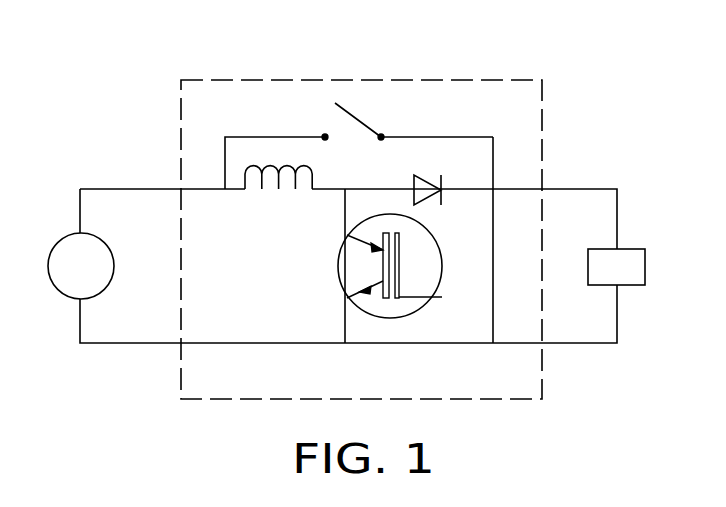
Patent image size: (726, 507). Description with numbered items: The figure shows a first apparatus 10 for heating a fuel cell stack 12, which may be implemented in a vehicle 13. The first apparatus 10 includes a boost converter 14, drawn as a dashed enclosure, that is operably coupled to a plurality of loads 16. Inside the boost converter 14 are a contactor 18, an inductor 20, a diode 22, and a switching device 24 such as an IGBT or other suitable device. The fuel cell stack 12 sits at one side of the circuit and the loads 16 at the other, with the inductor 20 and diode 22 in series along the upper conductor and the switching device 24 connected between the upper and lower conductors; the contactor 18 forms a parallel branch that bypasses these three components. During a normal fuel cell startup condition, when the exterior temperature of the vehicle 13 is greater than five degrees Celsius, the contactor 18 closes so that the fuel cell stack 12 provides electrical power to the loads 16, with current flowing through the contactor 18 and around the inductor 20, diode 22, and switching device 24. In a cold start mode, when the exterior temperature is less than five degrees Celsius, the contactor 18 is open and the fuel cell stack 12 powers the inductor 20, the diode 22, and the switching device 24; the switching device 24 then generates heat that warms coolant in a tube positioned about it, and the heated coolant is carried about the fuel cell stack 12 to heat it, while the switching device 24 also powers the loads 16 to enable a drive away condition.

The first apparatus 10 is at (582, 49).
The fuel cell stack 12 is at (62, 241).
The vehicle 13 is at (648, 162).
The boost converter 14 is at (222, 78).
The loads 16 is at (645, 266).
The contactor 18 is at (361, 122).
The inductor 20 is at (311, 172).
The diode 22 is at (425, 175).
The switching device 24 is at (338, 266).